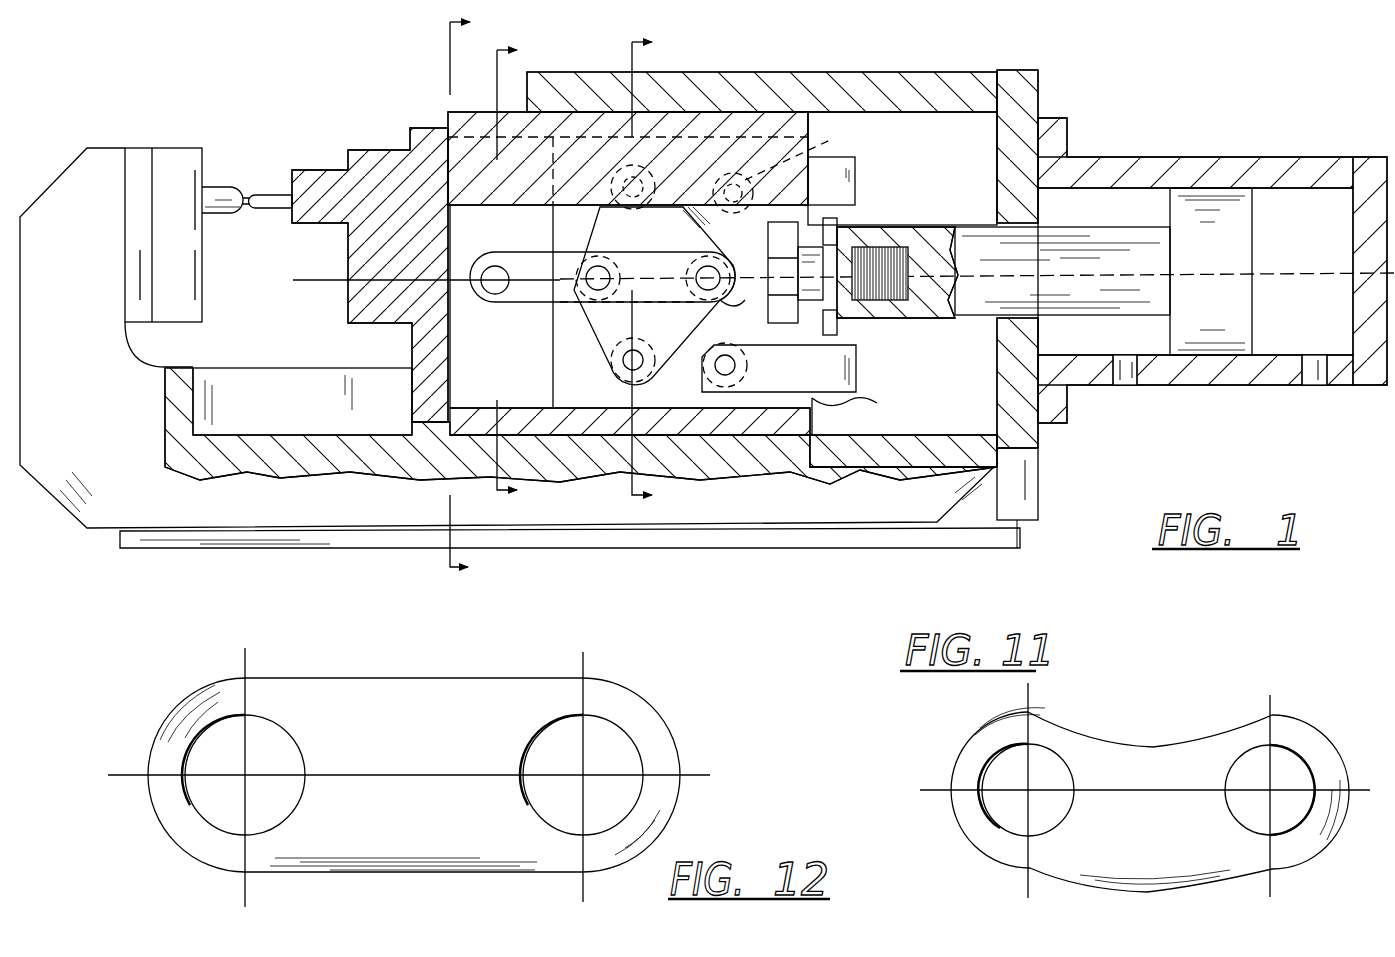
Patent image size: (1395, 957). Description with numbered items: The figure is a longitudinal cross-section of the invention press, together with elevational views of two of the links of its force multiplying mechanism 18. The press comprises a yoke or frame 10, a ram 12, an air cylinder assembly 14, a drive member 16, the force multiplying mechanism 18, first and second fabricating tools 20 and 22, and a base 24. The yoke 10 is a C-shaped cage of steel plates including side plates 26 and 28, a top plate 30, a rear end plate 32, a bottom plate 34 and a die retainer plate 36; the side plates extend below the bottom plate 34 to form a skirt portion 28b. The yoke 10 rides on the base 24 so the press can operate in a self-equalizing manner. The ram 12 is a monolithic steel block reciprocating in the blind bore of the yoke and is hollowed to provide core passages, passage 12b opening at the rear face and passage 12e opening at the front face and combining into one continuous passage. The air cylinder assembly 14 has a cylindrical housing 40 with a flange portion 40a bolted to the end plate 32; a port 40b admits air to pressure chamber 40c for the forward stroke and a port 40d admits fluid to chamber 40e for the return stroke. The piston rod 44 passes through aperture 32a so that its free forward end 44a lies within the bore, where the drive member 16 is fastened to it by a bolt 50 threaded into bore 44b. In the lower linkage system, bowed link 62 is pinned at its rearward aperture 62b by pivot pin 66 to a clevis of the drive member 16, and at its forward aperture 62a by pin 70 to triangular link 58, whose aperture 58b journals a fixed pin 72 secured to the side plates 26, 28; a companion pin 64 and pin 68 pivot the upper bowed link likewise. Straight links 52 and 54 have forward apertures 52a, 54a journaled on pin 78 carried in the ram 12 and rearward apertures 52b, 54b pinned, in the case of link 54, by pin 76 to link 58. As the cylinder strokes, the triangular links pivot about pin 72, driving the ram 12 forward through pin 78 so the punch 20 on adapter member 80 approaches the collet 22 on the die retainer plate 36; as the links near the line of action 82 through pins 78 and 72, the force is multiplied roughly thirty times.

In FIG. 1, the yoke 10 is at (1005, 44).
In FIG. 1, the ram 12 is at (607, 295).
In FIG. 1, the core passage 12b is at (867, 413).
In FIG. 1, the core passage 12e is at (540, 208).
In FIG. 1, the air cylinder assembly 14 is at (1262, 95).
In FIG. 1, the drive member 16 is at (862, 165).
In FIG. 1, the force multiplying mechanism 18 is at (389, 275).
In FIG. 1, the fabricating tool 20 is at (272, 195).
In FIG. 1, the fabricating tool 22 is at (228, 192).
In FIG. 1, the base 24 is at (205, 565).
In FIG. 1, the side plate 26 is at (956, 380).
In FIG. 1, the side plate 28 is at (520, 369).
In FIG. 1, the skirt portion 28b is at (373, 500).
In FIG. 1, the top plate 30 is at (955, 72).
In FIG. 1, the end plate 32 is at (1050, 100).
In FIG. 1, the aperture 32a is at (990, 225).
In FIG. 1, the bottom plate 34 is at (290, 435).
In FIG. 1, the die retainer plate 36 is at (137, 160).
In FIG. 1, the cylindrical housing 40 is at (1212, 265).
In FIG. 1, the flange portion 40a is at (1075, 120).
In FIG. 1, the port 40b is at (1312, 388).
In FIG. 1, the pressure chamber 40c is at (1345, 245).
In FIG. 1, the port 40d is at (1128, 388).
In FIG. 1, the chamber 40e is at (1130, 195).
In FIG. 1, the piston rod 44 is at (1062, 271).
In FIG. 1, the free forward end 44a is at (897, 275).
In FIG. 1, the threaded bore 44b is at (893, 320).
In FIG. 1, the bolt 50 is at (780, 262).
In FIG. 12, the link 52 is at (430, 763).
In FIG. 12, the forward aperture 52a is at (181, 753).
In FIG. 12, the rearward aperture 52b is at (661, 775).
In FIG. 1, the link 54 is at (600, 279).
In FIG. 12, the link 54 is at (430, 763).
In FIG. 1, the forward aperture 54a is at (510, 295).
In FIG. 12, the forward aperture 54a is at (205, 745).
In FIG. 12, the rearward aperture 54b is at (632, 740).
In FIG. 1, the link 58 is at (578, 340).
In FIG. 1, the aperture 58b is at (720, 292).
In FIG. 1, the link 62 is at (652, 301).
In FIG. 11, the link 62 is at (1145, 775).
In FIG. 11, the forward aperture 62a is at (1050, 770).
In FIG. 11, the rearward aperture 62b is at (1288, 820).
In FIG. 1, the pivot pin 64 is at (842, 150).
In FIG. 1, the pivot pin 66 is at (737, 365).
In FIG. 1, the pivot pin 68 is at (653, 218).
In FIG. 1, the pivot pin 70 is at (636, 352).
In FIG. 1, the fixed pin 72 is at (705, 276).
In FIG. 1, the pivot pin 76 is at (586, 276).
In FIG. 1, the pin 78 is at (497, 294).
In FIG. 1, the adapter member 80 is at (348, 305).
In FIG. 1, the line of action 82 is at (333, 278).